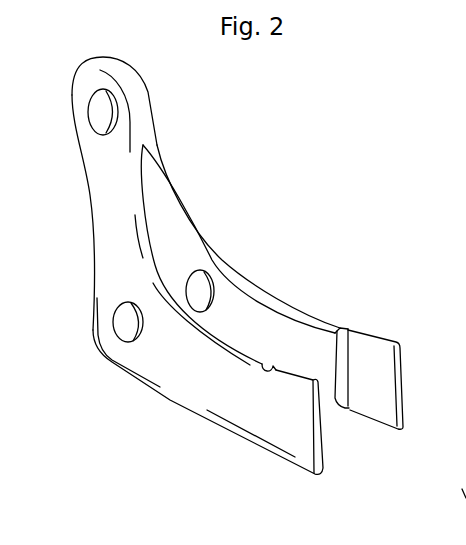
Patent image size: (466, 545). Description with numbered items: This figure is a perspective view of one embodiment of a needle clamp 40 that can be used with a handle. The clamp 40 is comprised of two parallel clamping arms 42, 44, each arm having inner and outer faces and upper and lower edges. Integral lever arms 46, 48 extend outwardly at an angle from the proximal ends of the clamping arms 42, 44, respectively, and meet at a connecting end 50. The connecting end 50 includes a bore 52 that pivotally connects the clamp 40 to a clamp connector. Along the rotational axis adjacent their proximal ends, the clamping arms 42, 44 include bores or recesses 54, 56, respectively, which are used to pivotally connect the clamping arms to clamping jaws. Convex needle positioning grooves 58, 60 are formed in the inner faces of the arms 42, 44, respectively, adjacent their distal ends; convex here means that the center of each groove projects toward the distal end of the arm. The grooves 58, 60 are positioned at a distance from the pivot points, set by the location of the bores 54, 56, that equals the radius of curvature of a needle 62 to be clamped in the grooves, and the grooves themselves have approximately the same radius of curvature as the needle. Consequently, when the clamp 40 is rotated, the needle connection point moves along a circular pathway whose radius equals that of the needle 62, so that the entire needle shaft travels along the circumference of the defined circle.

The needle clamp 40 is at (241, 271).
The clamping arm 42 is at (187, 386).
The clamping arm 44 is at (312, 314).
The lever arm 46 is at (110, 263).
The lever arm 48 is at (160, 200).
The connecting end 50 is at (118, 71).
The bore 52 is at (97, 113).
The bore or recess 54 is at (122, 329).
The bore or recess 56 is at (203, 278).
The convex needle positioning groove 58 is at (266, 366).
The convex needle positioning groove 60 is at (350, 327).
The needle 62 is at (455, 482).